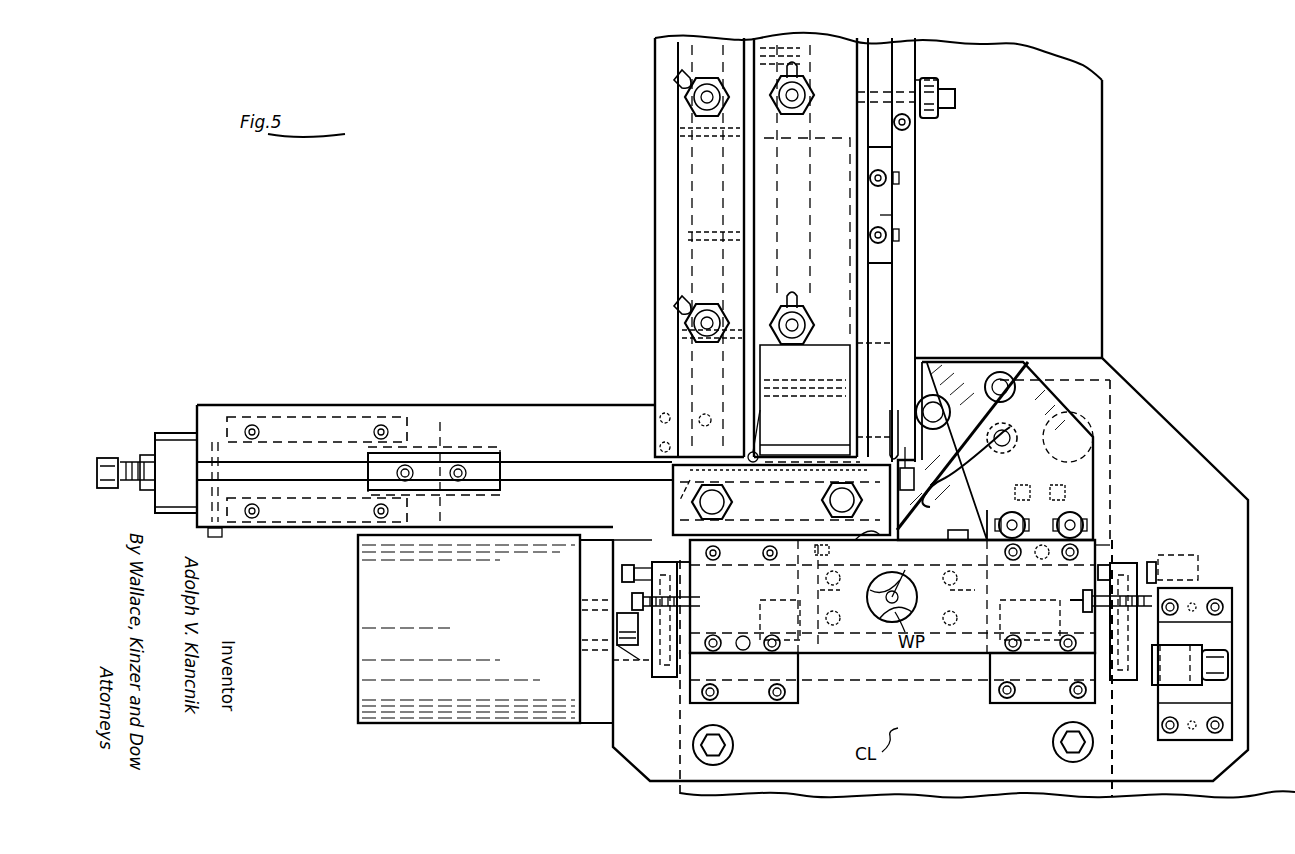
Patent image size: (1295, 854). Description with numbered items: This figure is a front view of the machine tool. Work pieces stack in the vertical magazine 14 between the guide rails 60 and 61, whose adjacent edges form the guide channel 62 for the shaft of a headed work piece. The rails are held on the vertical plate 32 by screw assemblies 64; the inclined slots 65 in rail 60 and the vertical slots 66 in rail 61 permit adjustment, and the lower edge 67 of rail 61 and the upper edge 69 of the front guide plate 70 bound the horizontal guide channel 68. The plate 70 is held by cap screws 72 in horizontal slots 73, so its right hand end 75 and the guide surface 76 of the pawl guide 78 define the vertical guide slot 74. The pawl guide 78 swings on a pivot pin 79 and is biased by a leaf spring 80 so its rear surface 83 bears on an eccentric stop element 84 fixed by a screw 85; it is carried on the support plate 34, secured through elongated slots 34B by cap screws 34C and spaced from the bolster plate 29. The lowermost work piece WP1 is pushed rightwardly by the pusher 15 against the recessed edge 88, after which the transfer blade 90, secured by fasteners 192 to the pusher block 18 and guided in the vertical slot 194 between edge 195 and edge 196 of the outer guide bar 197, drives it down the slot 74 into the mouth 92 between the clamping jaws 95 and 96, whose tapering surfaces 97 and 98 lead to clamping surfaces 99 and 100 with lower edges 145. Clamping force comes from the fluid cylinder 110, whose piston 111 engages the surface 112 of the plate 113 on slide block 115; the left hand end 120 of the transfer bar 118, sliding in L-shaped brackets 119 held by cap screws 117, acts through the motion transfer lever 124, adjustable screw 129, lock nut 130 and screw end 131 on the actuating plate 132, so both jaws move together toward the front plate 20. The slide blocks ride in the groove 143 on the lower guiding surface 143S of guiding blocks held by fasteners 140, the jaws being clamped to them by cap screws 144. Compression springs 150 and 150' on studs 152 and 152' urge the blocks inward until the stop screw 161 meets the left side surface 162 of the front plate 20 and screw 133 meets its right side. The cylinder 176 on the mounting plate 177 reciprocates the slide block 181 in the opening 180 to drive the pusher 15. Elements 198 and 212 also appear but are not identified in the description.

The magazine 14 is at (916, 201).
The reciprocatory pusher 15 is at (600, 458).
The transfer pusher 18 is at (895, 218).
The front plate 20 is at (743, 613).
The bolster plate 29 is at (1135, 432).
The vertical plate 32 is at (663, 212).
The support plate 34 is at (1064, 470).
The elongated slots 34B is at (1045, 518).
The cap screws 34C is at (1072, 520).
The guide rail 60 is at (688, 158).
The guide rail 61 is at (848, 312).
The guide channel 62 is at (758, 205).
The screw assemblies 64 is at (700, 100).
The elongated slots 65 is at (680, 80).
The elongated slots 66 is at (795, 70).
The lower edge 67 is at (772, 458).
The horizontal guide channel 68 is at (797, 458).
The upper edge 69 is at (790, 462).
The front guide plate 70 is at (782, 510).
The cap screws 72 is at (712, 504).
The horizontal slots 73 is at (712, 492).
The vertical guide slot 74 is at (888, 510).
The right hand end 75 is at (867, 542).
The guide surface 76 is at (910, 514).
The pawl guide 78 is at (960, 372).
The pivot pin 79 is at (934, 408).
The leaf spring 80 is at (960, 455).
The rear surface 83 is at (975, 372).
The eccentric stop element 84 is at (1005, 386).
The screw 85 is at (1012, 392).
The recessed edge 88 is at (909, 439).
The transfer blade 90 is at (896, 332).
The mouth 92 is at (905, 540).
The clamping jaw 95 is at (952, 530).
The clamping jaw 96 is at (822, 548).
The tapering surface 97 is at (848, 570).
The tapering surface 98 is at (935, 572).
The clamping surface 99 is at (915, 600).
The clamping surface 100 is at (872, 598).
The fluid operating cylinder 110 is at (485, 629).
The piston 111 is at (630, 646).
The surface 112 is at (648, 656).
The plate 113 is at (652, 674).
The slide block 115 is at (680, 565).
The cap screws 117 is at (770, 692).
The transfer bar 118 is at (890, 672).
The L-shaped brackets 119 is at (765, 705).
The left hand end 120 is at (680, 678).
The motion transfer lever 124 is at (1180, 680).
The adjustable screw 129 is at (1229, 664).
The lock nut 130 is at (1198, 684).
The screw end 131 is at (1135, 676).
The actuating plate 132 is at (1120, 560).
The screw 133 is at (1178, 585).
The fasteners 140 is at (720, 553).
The rectangular groove 143 is at (1013, 562).
The lower guiding surface 143S is at (746, 630).
The cap screws 144 is at (883, 587).
The lower edges 145 is at (906, 620).
The compression spring 150 is at (636, 595).
The compression spring 150' is at (1152, 603).
The stud 152 is at (886, 603).
The stud 152' is at (1070, 590).
The stop screw 161 is at (624, 574).
The left side surface 162 is at (677, 558).
The cylinder 176 is at (425, 422).
The mounting plate 177 is at (484, 425).
The opening 180 is at (598, 472).
The slide block 181 is at (496, 472).
The fasteners 192 is at (900, 178).
The vertical slot 194 is at (880, 288).
The edge 195 is at (932, 92).
The edge 196 is at (905, 70).
The outer guide bar 197 is at (905, 152).
The adjusting screw 198 is at (956, 98).
The link 212 is at (890, 448).
The lowermost work piece WP1 is at (758, 445).